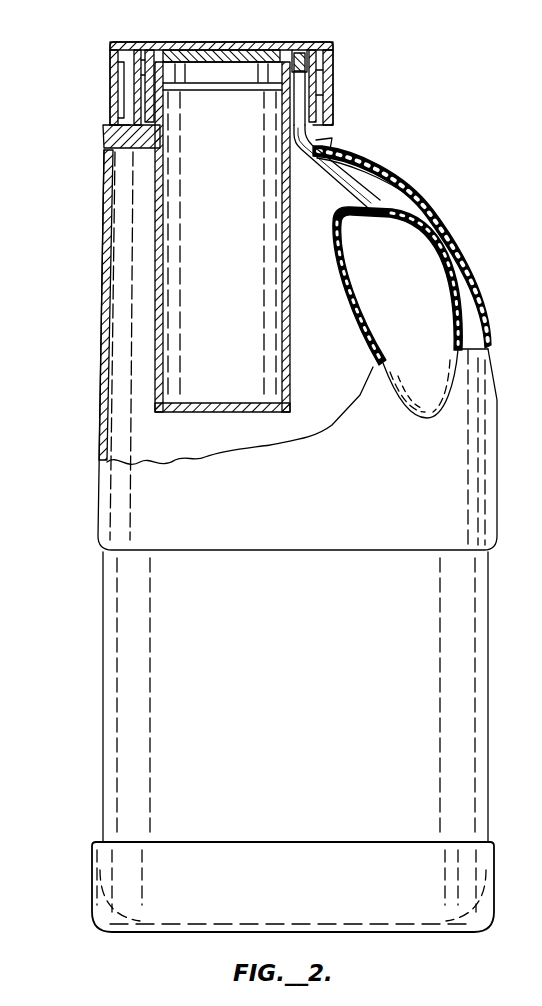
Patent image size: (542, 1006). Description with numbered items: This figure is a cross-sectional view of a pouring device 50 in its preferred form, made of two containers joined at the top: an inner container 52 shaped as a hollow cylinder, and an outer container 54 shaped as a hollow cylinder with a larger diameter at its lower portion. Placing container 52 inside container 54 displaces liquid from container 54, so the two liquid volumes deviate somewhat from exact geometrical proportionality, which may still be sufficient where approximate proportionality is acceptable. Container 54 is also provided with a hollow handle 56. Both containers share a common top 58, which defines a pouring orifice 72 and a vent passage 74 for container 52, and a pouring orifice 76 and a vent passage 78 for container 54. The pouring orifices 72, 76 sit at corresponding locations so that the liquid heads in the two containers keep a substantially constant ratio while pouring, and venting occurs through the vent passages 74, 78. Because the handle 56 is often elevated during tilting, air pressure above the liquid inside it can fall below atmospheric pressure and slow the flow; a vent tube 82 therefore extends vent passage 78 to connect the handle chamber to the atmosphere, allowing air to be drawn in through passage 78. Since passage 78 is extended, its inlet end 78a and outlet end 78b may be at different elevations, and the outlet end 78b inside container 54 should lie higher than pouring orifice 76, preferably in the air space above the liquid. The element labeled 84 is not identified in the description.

The pouring device 50 is at (274, 541).
The container 52 is at (290, 380).
The container 54 is at (490, 682).
The hollow handle 56 is at (436, 218).
The common top 58 is at (222, 50).
The pouring orifice 72 is at (177, 58).
The vent passage 74 is at (266, 50).
The pouring orifice 76 is at (147, 50).
The vent passage 78 is at (322, 44).
The inlet end 78a is at (316, 47).
The outlet end 78b is at (392, 197).
The vent tube 82 is at (348, 170).
The cap lip 84 is at (117, 64).